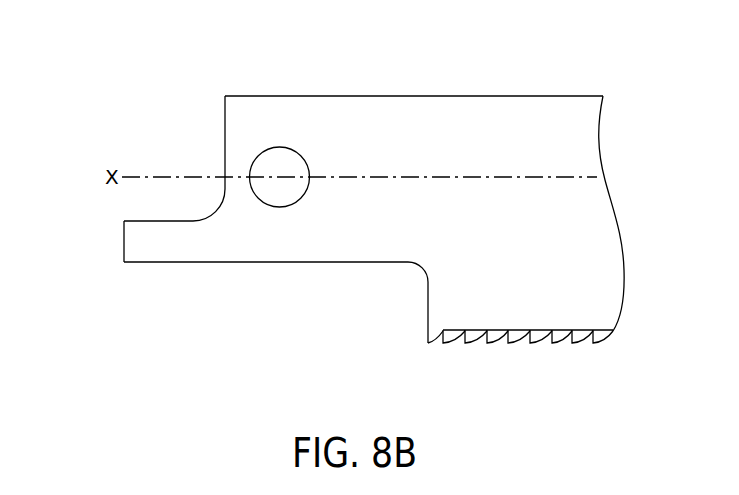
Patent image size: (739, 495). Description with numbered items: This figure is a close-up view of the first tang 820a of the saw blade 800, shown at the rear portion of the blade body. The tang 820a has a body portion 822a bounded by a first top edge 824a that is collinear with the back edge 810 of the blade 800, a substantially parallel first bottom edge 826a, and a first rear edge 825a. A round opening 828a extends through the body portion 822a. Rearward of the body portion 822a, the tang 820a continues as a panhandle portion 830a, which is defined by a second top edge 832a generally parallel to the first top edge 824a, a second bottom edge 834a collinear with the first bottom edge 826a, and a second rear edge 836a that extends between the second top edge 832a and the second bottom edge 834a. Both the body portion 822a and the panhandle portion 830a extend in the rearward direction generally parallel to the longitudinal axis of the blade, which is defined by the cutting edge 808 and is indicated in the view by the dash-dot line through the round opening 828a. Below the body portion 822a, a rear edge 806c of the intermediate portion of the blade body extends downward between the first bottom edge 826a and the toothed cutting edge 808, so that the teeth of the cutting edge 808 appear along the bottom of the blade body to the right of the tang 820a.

The saw blade 800 is at (591, 128).
The back edge 810 is at (538, 96).
The body portion 822a is at (320, 108).
The first top edge 824a is at (252, 96).
The first rear edge 825a is at (225, 137).
The second top edge 832a is at (148, 218).
The panhandle portion 830a is at (213, 250).
The second rear edge 836a is at (124, 243).
The second bottom edge 834a is at (158, 263).
The first tang 820a is at (287, 284).
The first bottom edge 826a is at (350, 250).
The vertical edge 806c is at (427, 297).
The cutting edge 808 is at (493, 334).
The round opening 828a is at (308, 162).